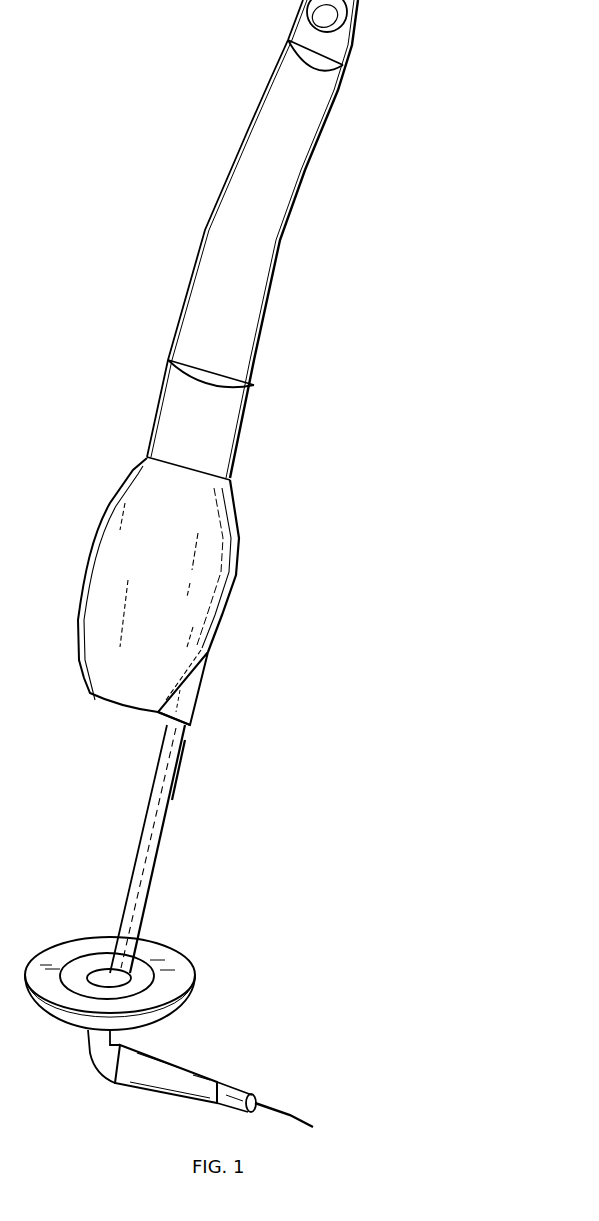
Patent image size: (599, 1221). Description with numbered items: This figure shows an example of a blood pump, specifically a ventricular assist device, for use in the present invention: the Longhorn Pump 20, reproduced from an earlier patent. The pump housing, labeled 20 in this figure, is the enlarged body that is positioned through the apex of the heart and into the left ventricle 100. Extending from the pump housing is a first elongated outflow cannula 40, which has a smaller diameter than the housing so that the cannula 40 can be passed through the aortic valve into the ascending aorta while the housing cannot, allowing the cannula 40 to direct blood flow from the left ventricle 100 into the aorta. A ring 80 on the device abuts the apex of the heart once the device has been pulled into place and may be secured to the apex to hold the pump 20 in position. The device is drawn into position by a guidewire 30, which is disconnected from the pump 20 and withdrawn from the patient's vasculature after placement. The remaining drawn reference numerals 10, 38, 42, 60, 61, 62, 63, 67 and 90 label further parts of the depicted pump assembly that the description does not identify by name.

The surgical device 10 is at (96, 214).
The blood pump (VAD) 20 is at (97, 552).
The guidewire 30 is at (205, 673).
The distal end of handle 38 is at (190, 727).
The outflow cannula 40 is at (310, 152).
The tube segment junction 42 is at (170, 363).
The cannula 60 is at (164, 821).
The flexible tubing 61 is at (88, 1052).
The cannula lumen 62 is at (157, 888).
The cannula wall 63 is at (176, 766).
The line 67 is at (293, 1111).
The ring 80 is at (173, 981).
The hub 90 is at (86, 972).
The left ventricle 100 is at (106, 1073).